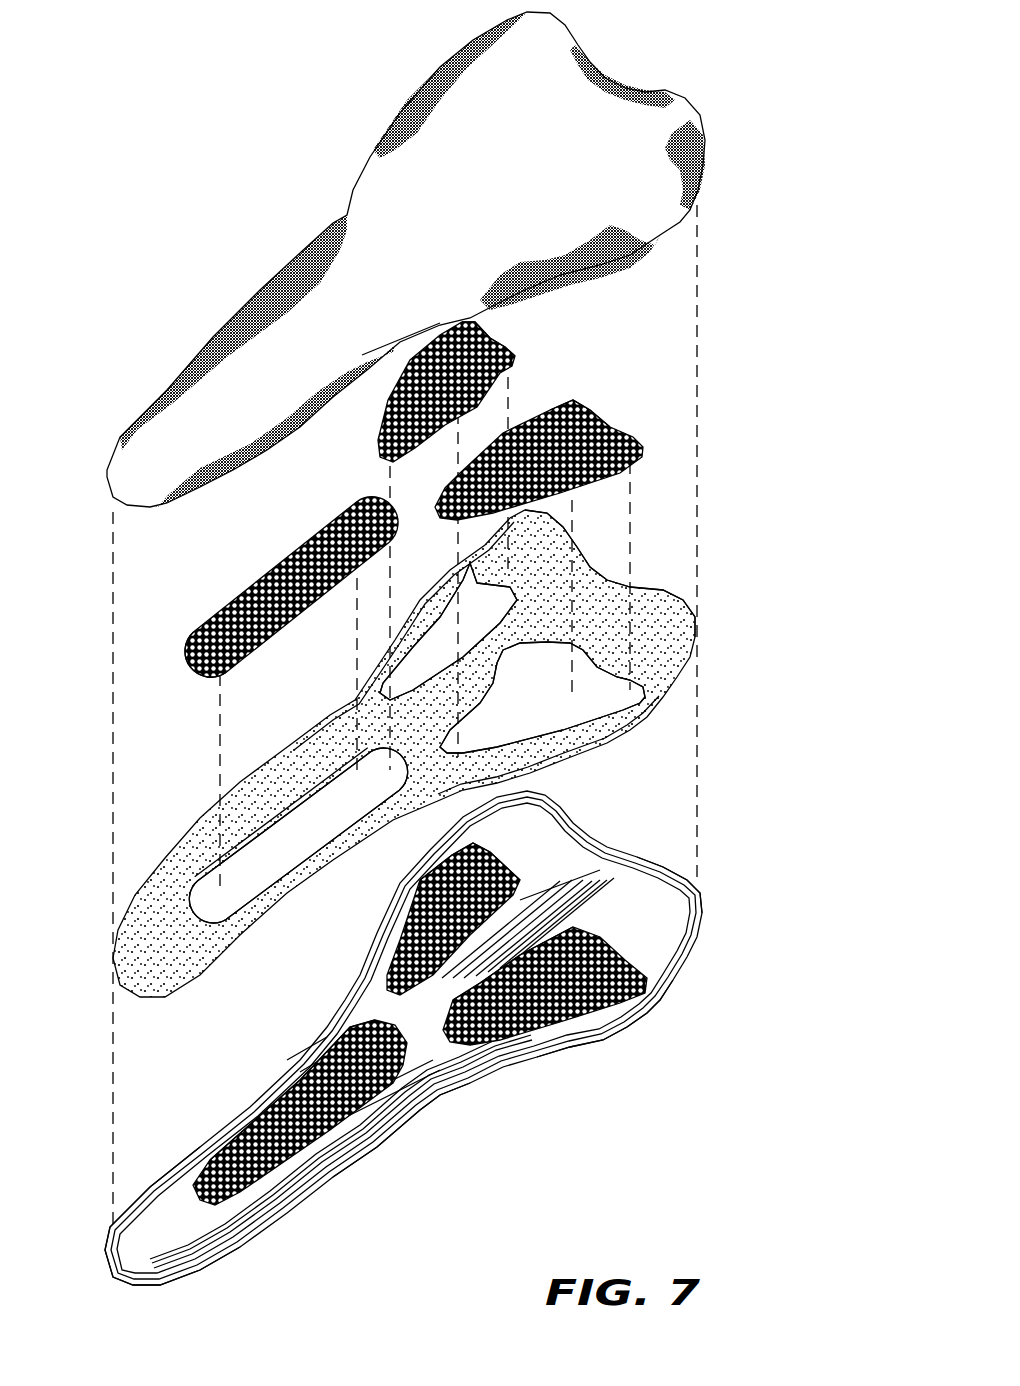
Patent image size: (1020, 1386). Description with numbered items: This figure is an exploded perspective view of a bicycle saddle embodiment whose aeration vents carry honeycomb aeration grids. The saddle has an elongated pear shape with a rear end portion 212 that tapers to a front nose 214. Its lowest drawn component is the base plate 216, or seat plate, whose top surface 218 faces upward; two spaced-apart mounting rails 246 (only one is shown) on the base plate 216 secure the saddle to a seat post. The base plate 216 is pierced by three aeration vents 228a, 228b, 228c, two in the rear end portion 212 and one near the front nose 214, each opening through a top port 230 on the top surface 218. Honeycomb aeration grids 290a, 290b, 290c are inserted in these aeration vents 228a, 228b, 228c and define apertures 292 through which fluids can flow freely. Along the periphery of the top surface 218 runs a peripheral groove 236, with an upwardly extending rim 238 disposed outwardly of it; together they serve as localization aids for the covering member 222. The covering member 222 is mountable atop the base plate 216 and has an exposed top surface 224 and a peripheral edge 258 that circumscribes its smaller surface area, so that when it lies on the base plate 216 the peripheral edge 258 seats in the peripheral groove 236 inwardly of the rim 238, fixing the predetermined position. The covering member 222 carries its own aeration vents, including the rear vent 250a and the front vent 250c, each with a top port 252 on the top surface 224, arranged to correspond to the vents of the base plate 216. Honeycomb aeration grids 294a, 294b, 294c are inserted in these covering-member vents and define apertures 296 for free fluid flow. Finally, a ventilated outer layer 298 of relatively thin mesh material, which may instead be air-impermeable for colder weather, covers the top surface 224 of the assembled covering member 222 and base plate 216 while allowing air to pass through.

The ventilated outer layer 298 is at (575, 107).
The apertures 296 is at (510, 358).
The honeycomb aeration grid 294a is at (637, 447).
The honeycomb aeration grid 294b is at (503, 343).
The honeycomb aeration grid 294c is at (283, 553).
The top port 252 is at (440, 603).
The exposed top surface 224 is at (593, 590).
The peripheral edge 258 is at (677, 590).
The covering member 222 is at (667, 640).
The aeration vent 250a is at (660, 727).
The aeration vent 250c is at (380, 640).
The top port 230 is at (517, 880).
The rear end portion 212 is at (633, 870).
The peripheral groove 236 is at (687, 880).
The base plate 216 is at (650, 988).
The top surface 218 is at (597, 1020).
The honeycomb aeration grid 290a is at (510, 1032).
The honeycomb aeration grid 290b is at (437, 879).
The honeycomb aeration grid 290c is at (268, 1177).
The apertures 292 is at (540, 1030).
The aeration vent 228a is at (557, 1022).
The aeration vent 228b is at (380, 963).
The aeration vent 228c is at (272, 1147).
The upwardly extending rim 238 is at (453, 1087).
The mounting rails 246 is at (400, 1140).
The front nose 214 is at (158, 1233).